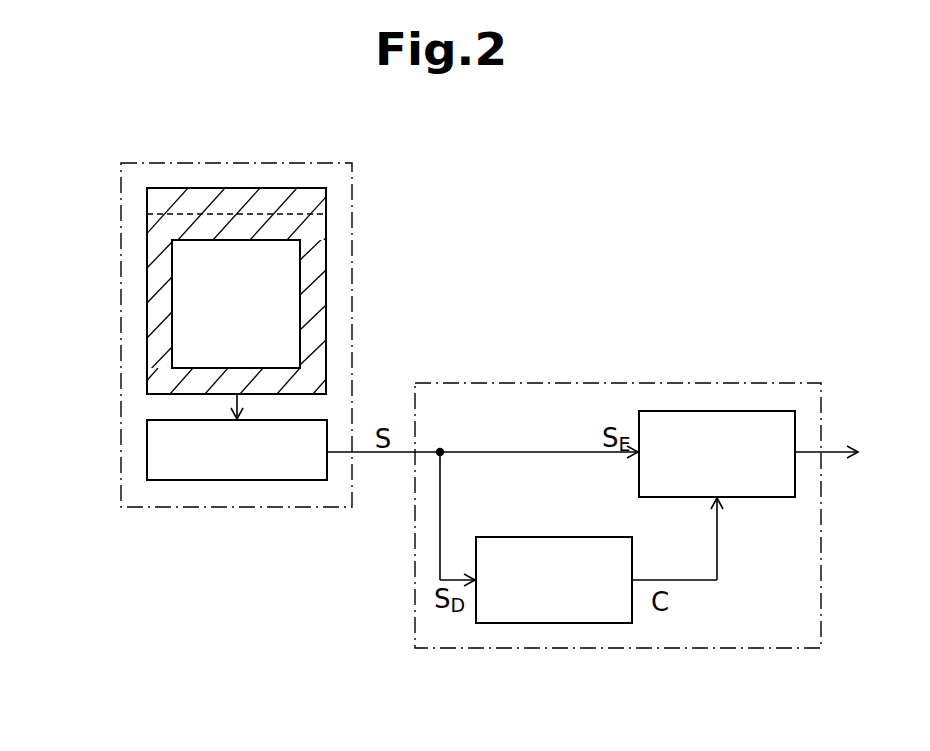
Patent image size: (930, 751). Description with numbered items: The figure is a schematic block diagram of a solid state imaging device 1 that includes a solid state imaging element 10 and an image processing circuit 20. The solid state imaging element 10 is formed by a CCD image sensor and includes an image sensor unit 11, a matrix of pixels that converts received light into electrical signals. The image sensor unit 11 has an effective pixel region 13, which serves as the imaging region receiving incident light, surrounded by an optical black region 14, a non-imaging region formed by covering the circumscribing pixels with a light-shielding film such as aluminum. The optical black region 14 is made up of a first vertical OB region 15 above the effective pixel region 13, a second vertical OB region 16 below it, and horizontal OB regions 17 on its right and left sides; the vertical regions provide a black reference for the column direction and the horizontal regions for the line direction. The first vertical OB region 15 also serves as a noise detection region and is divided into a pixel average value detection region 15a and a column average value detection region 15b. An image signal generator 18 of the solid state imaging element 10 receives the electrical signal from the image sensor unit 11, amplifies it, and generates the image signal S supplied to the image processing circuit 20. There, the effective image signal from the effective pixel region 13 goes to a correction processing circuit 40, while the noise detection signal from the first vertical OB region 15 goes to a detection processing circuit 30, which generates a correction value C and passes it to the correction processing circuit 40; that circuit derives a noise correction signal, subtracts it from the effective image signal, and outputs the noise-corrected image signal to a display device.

The solid state imaging device 1 is at (490, 243).
The solid state imaging element 10 is at (293, 162).
The image sensor unit 11 is at (329, 193).
The effective pixel region 13 is at (287, 279).
The optical black region 14 is at (152, 252).
The first vertical OB region 15 is at (62, 186).
The pixel average value detection region 15a is at (147, 202).
The column average value detection region 15b is at (147, 226).
The second vertical OB region 16 is at (320, 380).
The horizontal OB regions 17 is at (152, 290).
The image signal generator 18 is at (233, 482).
The image processing circuit 20 is at (543, 383).
The detection processing circuit 30 is at (567, 625).
The correction processing circuit 40 is at (777, 411).